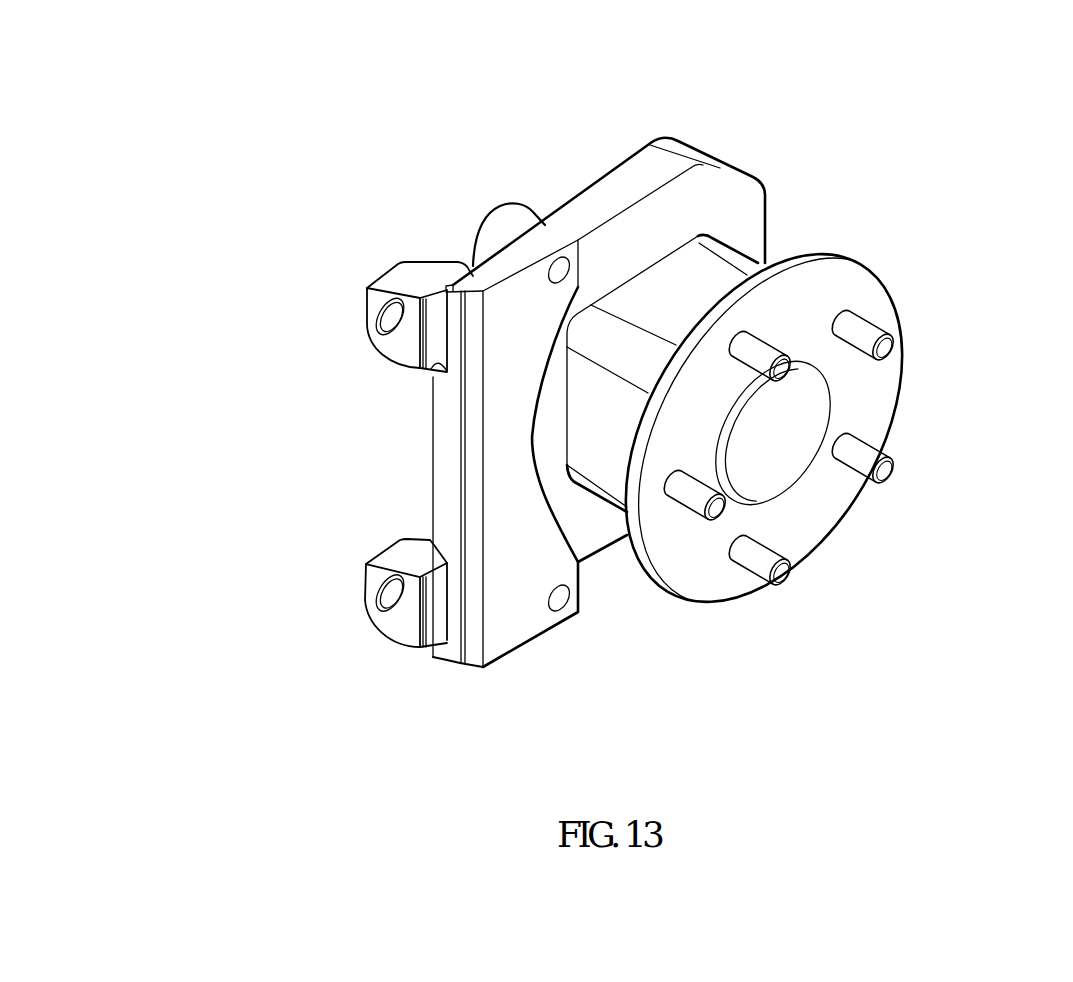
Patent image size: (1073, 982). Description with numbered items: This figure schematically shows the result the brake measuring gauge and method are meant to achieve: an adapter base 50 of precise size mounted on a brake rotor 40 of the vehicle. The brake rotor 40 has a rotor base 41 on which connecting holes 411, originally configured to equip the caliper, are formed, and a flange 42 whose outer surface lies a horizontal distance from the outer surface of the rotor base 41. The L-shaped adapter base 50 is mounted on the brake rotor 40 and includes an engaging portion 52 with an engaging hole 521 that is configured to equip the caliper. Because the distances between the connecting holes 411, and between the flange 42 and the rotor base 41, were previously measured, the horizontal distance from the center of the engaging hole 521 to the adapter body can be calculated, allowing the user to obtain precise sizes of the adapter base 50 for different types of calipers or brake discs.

The brake rotor 40 is at (841, 196).
The rotor base 41 is at (637, 400).
The connecting hole 411 is at (559, 598).
The flange 42 is at (875, 395).
The adapter base 50 is at (320, 418).
The engaging portion 52 is at (315, 408).
The engaging hole 521 is at (388, 320).